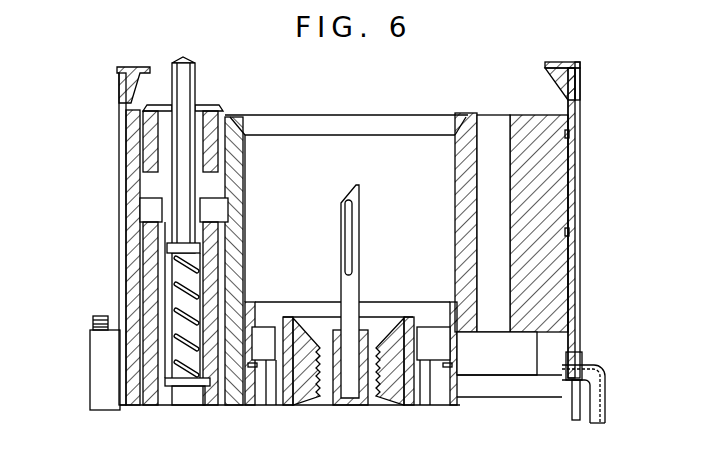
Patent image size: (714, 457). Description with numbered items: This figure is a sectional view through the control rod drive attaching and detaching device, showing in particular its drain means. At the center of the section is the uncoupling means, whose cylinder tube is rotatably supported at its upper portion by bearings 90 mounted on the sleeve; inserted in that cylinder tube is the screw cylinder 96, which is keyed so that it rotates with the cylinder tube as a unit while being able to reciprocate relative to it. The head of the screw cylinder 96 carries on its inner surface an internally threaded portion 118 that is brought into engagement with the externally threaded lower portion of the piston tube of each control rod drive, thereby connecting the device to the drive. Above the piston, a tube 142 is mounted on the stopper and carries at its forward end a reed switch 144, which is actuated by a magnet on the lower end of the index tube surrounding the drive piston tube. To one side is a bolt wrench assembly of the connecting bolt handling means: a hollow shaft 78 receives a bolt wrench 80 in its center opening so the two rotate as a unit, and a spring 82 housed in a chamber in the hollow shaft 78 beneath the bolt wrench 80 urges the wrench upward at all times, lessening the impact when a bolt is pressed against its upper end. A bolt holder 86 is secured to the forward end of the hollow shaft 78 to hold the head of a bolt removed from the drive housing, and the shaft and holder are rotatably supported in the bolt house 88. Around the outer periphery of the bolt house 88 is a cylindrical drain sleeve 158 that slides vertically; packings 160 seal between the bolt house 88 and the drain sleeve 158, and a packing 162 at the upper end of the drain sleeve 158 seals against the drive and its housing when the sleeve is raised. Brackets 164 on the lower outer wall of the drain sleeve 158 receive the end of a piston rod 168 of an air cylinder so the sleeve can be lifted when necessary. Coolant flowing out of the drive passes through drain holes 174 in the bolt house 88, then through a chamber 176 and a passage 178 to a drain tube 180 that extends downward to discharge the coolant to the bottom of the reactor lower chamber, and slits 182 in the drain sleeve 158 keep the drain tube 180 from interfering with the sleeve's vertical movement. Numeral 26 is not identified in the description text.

The nut 26 is at (415, 305).
The hollow shaft 78 is at (157, 352).
The bolt wrench 80 is at (175, 63).
The spring 82 is at (170, 280).
The bolt holder 86 is at (150, 190).
The bolt house 88 is at (560, 168).
The bearings 90 is at (267, 383).
The screw cylinder 96 is at (385, 350).
The internally threaded portion 118 is at (288, 370).
The tube 142 is at (368, 330).
The reed switch 144 is at (357, 203).
The drain sleeve 158 is at (125, 112).
The packings 160 is at (130, 140).
The packing 162 is at (118, 78).
The brackets 164 is at (98, 383).
The piston rod 168 is at (100, 318).
The drain holes 174 is at (495, 115).
The chamber 176 is at (537, 352).
The passage 178 is at (552, 380).
The drain tube 180 is at (600, 398).
The slits 182 is at (582, 358).